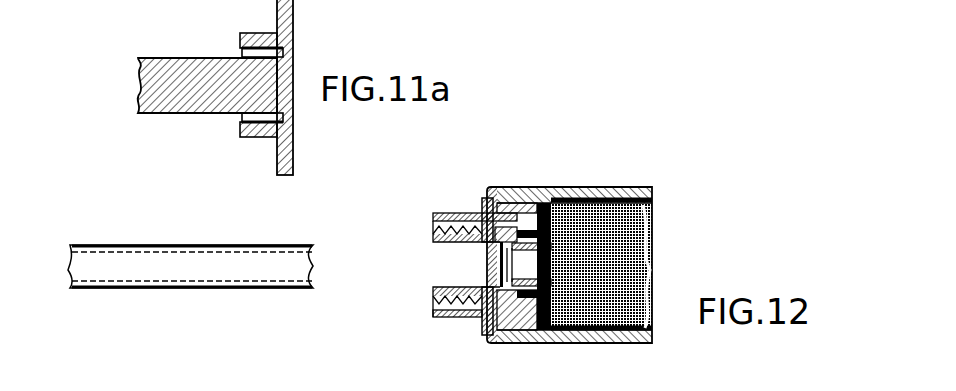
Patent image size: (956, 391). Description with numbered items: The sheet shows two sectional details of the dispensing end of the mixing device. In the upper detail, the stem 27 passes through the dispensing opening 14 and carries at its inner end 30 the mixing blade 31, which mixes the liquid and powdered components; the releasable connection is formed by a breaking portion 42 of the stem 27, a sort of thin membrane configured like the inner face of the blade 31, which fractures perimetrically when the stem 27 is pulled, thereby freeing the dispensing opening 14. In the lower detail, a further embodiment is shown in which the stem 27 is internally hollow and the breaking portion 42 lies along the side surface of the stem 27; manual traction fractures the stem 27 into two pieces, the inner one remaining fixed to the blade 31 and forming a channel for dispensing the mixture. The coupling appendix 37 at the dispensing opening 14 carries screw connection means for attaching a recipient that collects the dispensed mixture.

In FIG. 12, the dispensing opening 14 is at (480, 247).
In FIG. 12, the actuation means 27 is at (170, 276).
In FIG. 11A, the inner end 30 is at (187, 97).
In FIG. 11A, the mixing blade 31 is at (293, 160).
In FIG. 12, the mixing blade 31 is at (555, 188).
In FIG. 12, the coupling appendix 37 is at (443, 212).
In FIG. 11A, the breaking portion 42 is at (283, 53).
In FIG. 12, the breaking portion 42 is at (318, 253).